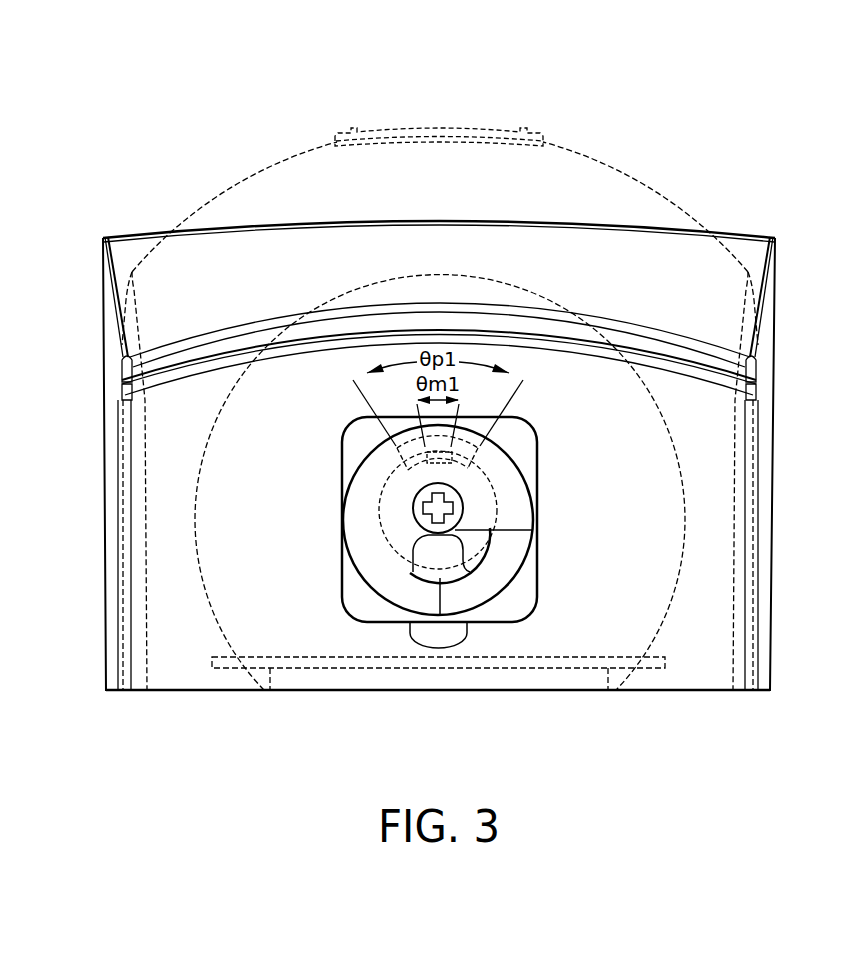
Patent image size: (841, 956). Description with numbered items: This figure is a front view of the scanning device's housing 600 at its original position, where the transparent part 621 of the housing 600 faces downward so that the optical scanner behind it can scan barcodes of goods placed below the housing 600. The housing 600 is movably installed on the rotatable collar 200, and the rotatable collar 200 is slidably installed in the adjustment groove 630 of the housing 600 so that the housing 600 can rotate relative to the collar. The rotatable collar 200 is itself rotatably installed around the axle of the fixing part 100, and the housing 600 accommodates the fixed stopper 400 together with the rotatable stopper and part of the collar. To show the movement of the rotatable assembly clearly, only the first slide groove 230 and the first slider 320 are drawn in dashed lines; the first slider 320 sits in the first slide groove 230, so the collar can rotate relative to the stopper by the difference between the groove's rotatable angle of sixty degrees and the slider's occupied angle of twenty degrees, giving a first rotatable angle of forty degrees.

The fixing part 100 is at (753, 238).
The rotatable collar 200 is at (527, 459).
The first slide groove 230 is at (415, 452).
The first slider 320 is at (443, 463).
The fixed stopper 400 is at (507, 553).
The housing 600 is at (200, 207).
The transparent part 621 is at (573, 668).
The adjustment groove 630 is at (440, 128).